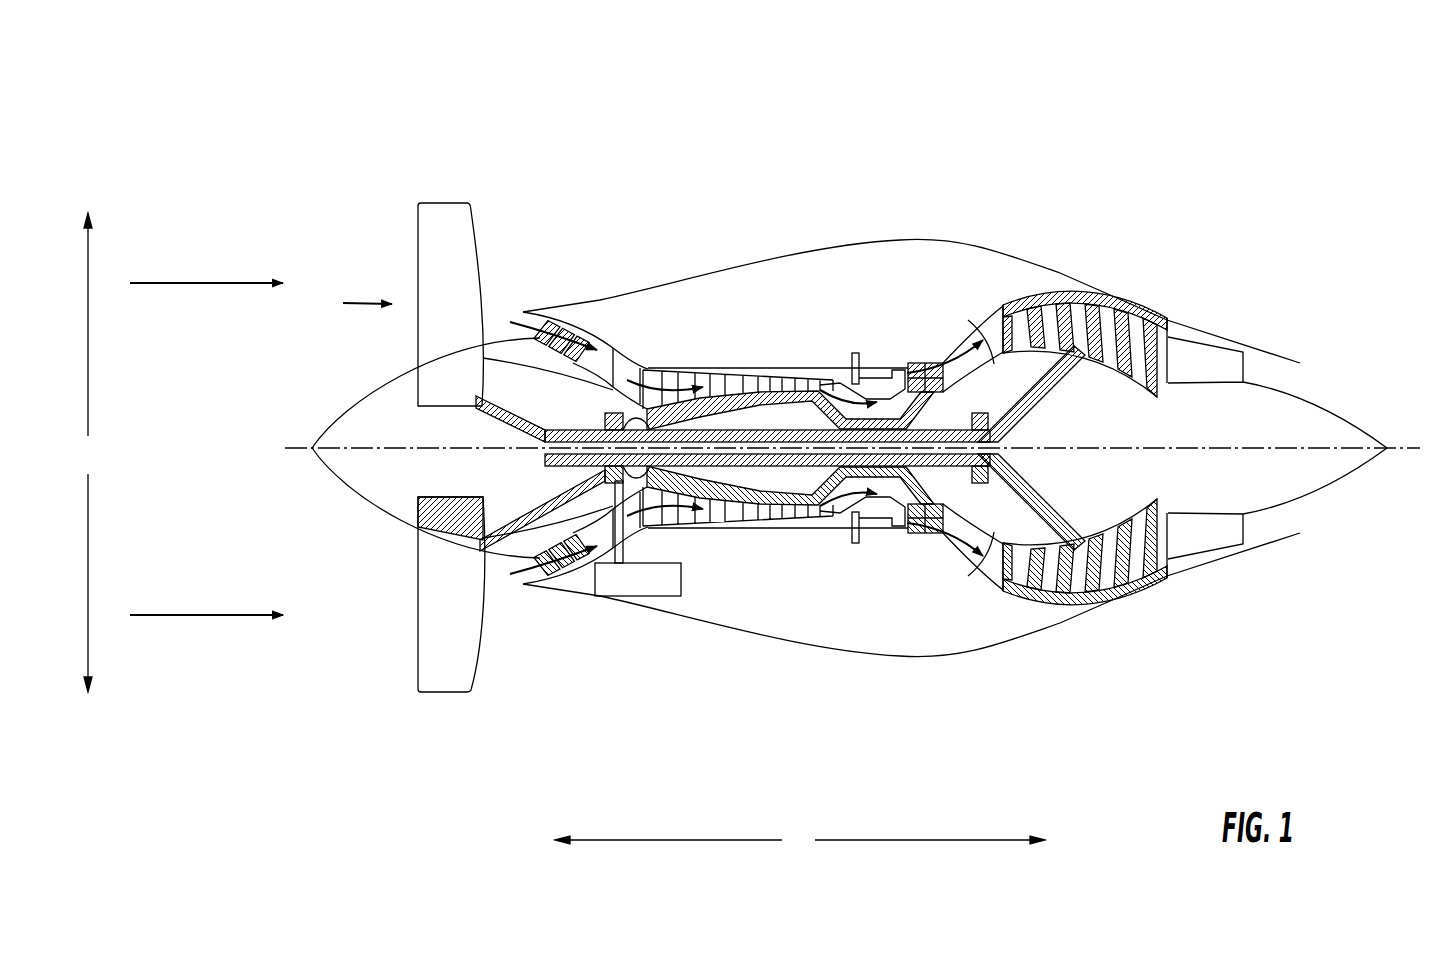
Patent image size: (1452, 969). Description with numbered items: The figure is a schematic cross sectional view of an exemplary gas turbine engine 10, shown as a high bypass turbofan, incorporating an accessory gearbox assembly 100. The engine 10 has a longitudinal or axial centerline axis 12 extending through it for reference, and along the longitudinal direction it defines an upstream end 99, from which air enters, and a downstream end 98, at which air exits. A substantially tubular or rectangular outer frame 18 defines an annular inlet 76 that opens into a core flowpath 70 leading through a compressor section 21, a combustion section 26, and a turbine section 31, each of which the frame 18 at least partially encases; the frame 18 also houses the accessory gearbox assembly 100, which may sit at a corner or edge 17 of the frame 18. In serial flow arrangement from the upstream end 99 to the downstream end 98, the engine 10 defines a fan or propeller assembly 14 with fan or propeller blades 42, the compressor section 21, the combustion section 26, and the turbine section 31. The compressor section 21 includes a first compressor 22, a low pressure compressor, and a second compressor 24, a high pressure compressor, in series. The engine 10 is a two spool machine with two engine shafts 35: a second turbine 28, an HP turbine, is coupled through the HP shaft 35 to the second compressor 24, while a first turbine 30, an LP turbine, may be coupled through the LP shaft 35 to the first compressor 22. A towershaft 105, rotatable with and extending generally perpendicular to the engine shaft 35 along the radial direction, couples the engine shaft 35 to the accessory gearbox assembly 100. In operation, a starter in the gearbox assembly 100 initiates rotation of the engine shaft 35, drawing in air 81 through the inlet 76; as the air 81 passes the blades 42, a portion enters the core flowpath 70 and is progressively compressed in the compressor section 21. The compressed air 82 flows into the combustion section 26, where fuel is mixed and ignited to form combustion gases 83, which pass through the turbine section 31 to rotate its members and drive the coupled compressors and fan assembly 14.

The gas turbine engine 10 is at (420, 123).
The axial centerline axis 12 is at (1413, 450).
The fan or propeller assembly 14 is at (352, 306).
The corner or edge 17 is at (556, 598).
The outer frame 18 is at (1200, 320).
The compressor section 21 is at (713, 327).
The first compressor 22 is at (577, 330).
The second compressor 24 is at (733, 377).
The combustion section 26 is at (867, 340).
The second turbine 28 is at (933, 357).
The first turbine 30 is at (1081, 355).
The turbine section 31 is at (1063, 282).
The engine shaft 35 is at (512, 403).
The fan or propeller blades 42 is at (432, 249).
The core flowpath 70 is at (513, 332).
The annular inlet 76 is at (515, 580).
The air 81 is at (213, 283).
The compressed air 82 is at (847, 373).
The combustion gases 83 is at (923, 370).
The downstream end 98 is at (1403, 429).
The upstream end 99 is at (110, 466).
The accessory gearbox assembly 100 is at (587, 592).
The towershaft 105 is at (623, 535).